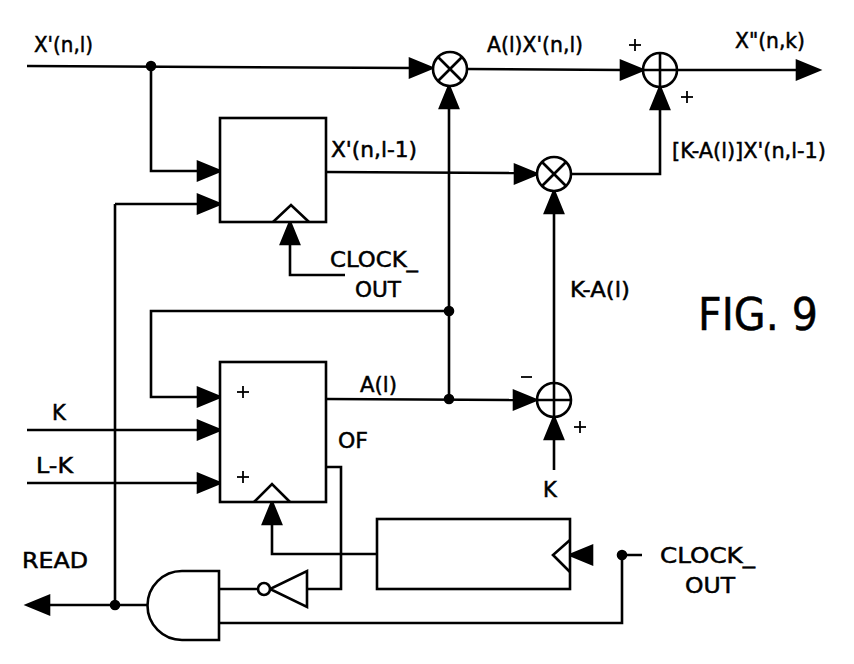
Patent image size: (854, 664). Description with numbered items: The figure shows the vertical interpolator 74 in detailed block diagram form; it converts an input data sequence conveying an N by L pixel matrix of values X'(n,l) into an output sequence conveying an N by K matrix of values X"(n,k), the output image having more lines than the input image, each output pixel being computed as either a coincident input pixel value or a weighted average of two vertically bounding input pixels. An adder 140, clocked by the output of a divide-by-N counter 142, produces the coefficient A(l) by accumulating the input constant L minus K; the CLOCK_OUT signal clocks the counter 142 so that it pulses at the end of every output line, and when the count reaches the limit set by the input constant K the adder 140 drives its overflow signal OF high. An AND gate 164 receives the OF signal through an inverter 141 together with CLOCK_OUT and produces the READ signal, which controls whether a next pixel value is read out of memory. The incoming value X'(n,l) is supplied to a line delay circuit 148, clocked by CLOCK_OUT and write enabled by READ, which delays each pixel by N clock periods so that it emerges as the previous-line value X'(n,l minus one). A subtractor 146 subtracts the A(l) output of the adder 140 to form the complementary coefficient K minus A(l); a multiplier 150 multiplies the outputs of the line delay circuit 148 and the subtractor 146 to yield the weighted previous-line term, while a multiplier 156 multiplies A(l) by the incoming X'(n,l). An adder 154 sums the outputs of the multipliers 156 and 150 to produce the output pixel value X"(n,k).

The vertical interpolator 74 is at (762, 451).
The adder 140 is at (303, 472).
The inverter 141 is at (283, 583).
The divide-by-N counter 142 is at (498, 519).
The subtractor 146 is at (568, 395).
The line delay circuit 148 is at (274, 118).
The multiplier 150 is at (553, 157).
The adder 154 is at (651, 56).
The multiplier 156 is at (437, 57).
The AND gate 164 is at (208, 617).